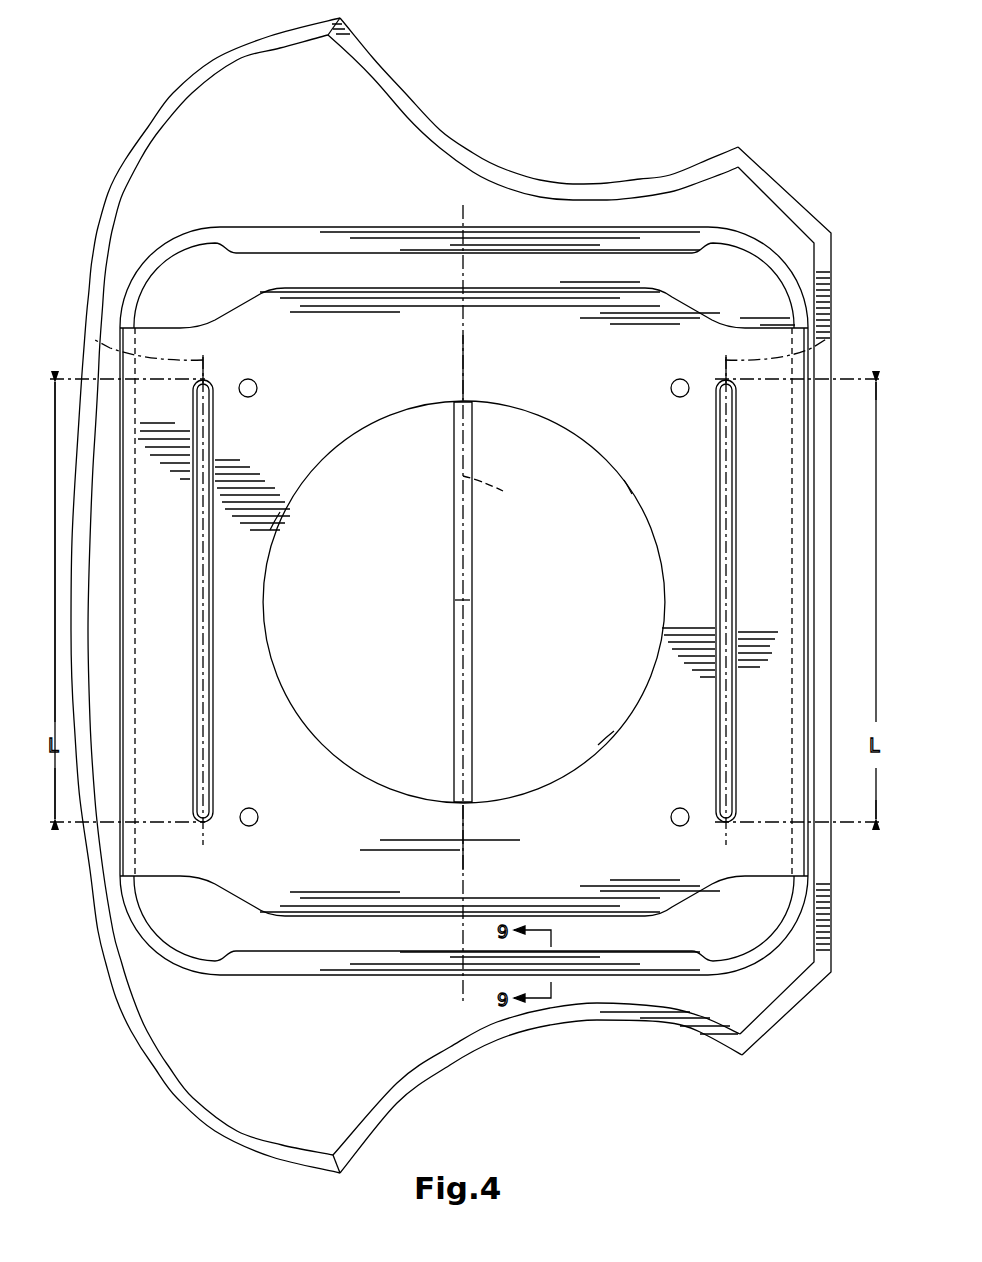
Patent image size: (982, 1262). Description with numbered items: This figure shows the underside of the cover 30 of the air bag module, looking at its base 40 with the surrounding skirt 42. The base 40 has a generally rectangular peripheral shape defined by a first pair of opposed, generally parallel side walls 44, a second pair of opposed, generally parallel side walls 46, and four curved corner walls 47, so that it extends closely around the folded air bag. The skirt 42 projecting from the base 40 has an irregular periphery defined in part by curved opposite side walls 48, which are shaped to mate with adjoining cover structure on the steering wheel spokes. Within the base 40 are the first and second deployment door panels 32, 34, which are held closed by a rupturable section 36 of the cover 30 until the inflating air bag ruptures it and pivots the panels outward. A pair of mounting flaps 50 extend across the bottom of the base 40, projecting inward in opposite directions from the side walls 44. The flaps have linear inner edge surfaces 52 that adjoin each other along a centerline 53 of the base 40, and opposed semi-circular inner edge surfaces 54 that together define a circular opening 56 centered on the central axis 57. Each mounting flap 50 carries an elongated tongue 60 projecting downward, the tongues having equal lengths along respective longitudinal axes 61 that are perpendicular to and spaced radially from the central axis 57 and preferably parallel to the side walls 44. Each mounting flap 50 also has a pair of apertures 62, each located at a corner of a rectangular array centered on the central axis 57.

The cover 30 is at (156, 91).
The first deployment door panel 32 is at (417, 426).
The second deployment door panel 34 is at (521, 433).
The rupturable section 36 is at (453, 469).
The base 40 is at (336, 222).
The skirt 42 is at (376, 80).
The first pair of opposed side walls 44 is at (128, 582).
The second pair of opposed side walls 46 is at (420, 240).
The curved corner walls 47 is at (148, 263).
The curved opposite side walls 48 is at (537, 184).
The mounting flaps 50 is at (248, 296).
The linear inner edge surfaces 52 is at (461, 345).
The centerline 53 is at (495, 494).
The semi-circular inner edge surfaces 54 is at (276, 527).
The circular opening 56 is at (607, 740).
The central axis 57 is at (455, 605).
The tongue 60 is at (213, 648).
The longitudinal axes 61 is at (95, 342).
The apertures 62 is at (257, 380).